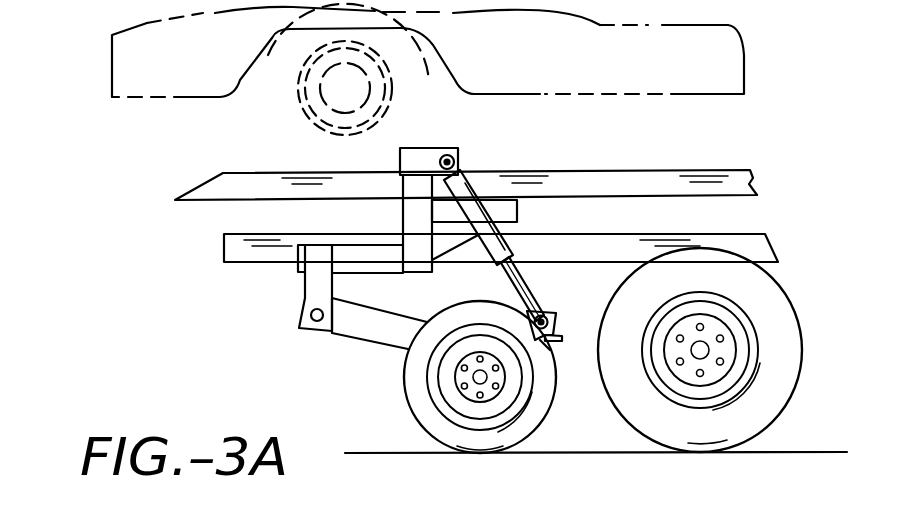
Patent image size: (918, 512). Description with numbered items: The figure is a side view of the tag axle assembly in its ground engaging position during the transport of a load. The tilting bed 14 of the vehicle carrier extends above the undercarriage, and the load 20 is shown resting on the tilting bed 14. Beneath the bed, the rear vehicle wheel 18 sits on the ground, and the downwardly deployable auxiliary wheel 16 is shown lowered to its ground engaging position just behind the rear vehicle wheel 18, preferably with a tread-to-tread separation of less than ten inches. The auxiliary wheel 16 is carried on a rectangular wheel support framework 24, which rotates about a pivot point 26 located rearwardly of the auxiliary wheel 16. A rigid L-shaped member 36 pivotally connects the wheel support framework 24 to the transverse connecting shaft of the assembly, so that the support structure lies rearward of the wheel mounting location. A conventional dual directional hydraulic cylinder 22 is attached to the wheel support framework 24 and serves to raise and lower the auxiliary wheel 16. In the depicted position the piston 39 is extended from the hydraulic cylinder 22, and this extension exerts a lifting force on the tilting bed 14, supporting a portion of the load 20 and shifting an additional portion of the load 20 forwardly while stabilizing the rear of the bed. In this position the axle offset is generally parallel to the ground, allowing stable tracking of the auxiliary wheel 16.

The load 20 is at (748, 15).
The tilting bed 14 is at (203, 203).
The hydraulic cylinder 22 is at (462, 172).
The piston 39 is at (529, 290).
The L-shaped member 36 is at (305, 288).
The pivot point 26 is at (310, 323).
The wheel support framework 24 is at (361, 342).
The auxiliary wheel 16 is at (413, 420).
The rear vehicle wheel 18 is at (793, 303).